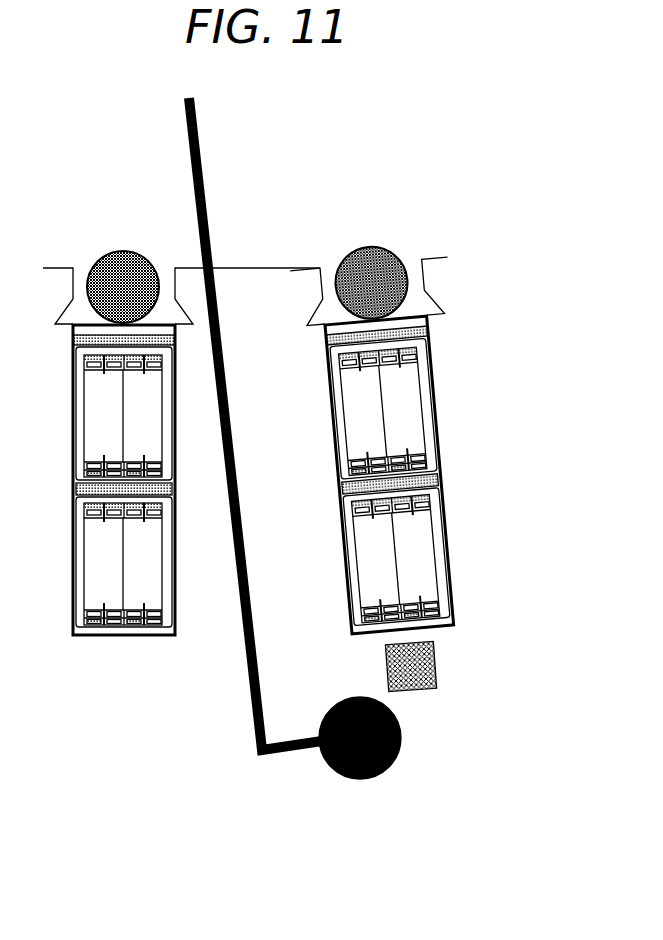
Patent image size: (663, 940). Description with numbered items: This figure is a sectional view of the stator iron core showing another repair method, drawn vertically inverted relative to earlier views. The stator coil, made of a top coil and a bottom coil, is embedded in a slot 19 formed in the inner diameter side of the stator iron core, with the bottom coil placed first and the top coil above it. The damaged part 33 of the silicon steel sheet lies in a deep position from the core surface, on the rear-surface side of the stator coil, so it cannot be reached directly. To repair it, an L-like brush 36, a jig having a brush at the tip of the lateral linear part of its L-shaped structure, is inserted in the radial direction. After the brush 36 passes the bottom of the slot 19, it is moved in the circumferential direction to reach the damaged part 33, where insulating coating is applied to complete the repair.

The slot 19 is at (115, 635).
The damaged part 33 is at (432, 660).
The brush 36 is at (397, 757).